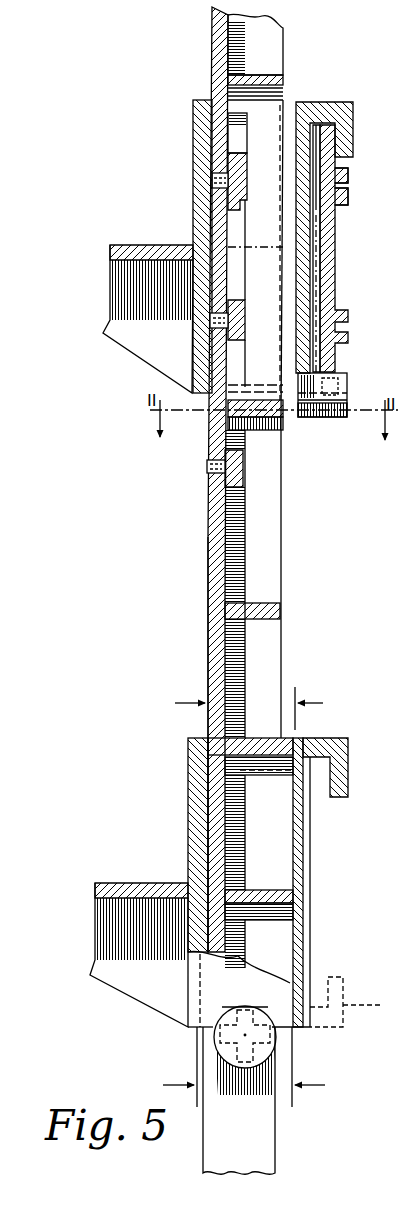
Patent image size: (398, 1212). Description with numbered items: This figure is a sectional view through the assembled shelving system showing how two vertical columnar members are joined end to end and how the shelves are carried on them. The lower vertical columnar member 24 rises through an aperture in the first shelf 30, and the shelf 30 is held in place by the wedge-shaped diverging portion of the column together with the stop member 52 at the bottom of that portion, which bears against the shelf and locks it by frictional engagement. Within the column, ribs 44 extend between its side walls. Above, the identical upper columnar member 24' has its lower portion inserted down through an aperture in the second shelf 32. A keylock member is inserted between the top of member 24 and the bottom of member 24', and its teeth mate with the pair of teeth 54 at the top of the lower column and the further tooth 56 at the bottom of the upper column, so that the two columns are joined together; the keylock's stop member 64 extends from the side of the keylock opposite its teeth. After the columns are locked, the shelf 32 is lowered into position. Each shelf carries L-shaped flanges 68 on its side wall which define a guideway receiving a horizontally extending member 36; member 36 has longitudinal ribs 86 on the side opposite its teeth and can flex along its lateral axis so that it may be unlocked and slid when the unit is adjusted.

The vertical columnar member 24' is at (216, 479).
The L-shaped flange 68 is at (328, 101).
The tooth 56 is at (236, 165).
The shelf 32 is at (163, 241).
The ribs 86 is at (350, 196).
The horizontally extending member 36 is at (338, 266).
The teeth 54 is at (243, 324).
The stop member 64 is at (347, 381).
The vertical columnar member 24 is at (181, 744).
The ribs 44 is at (280, 612).
The shelf 30 is at (122, 881).
The stop member 52 is at (290, 1044).